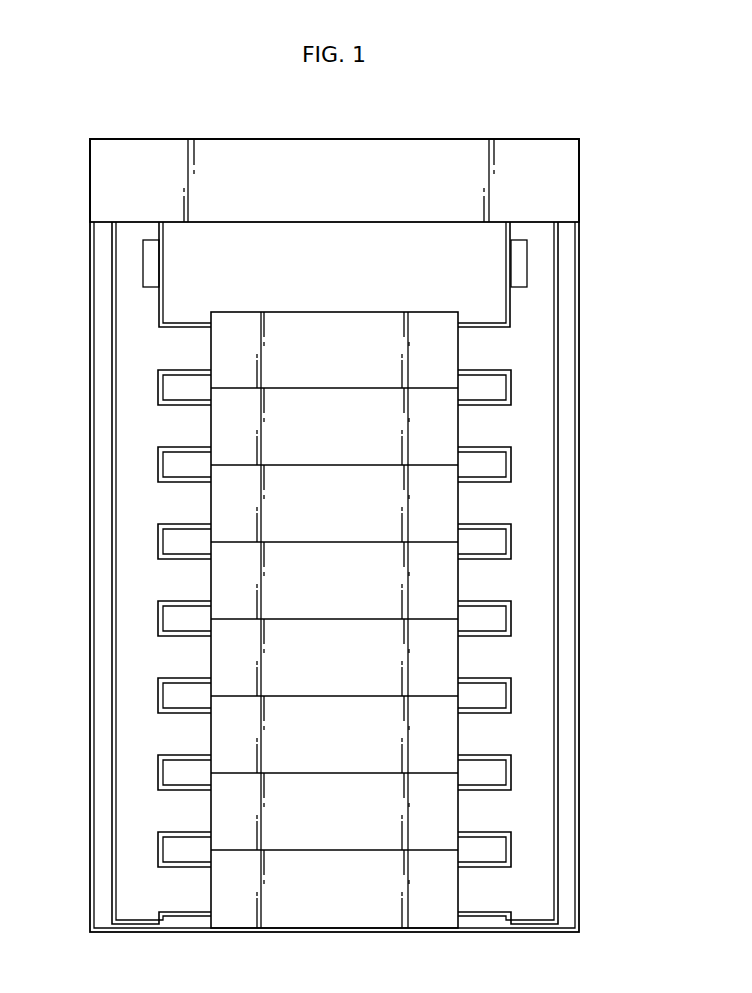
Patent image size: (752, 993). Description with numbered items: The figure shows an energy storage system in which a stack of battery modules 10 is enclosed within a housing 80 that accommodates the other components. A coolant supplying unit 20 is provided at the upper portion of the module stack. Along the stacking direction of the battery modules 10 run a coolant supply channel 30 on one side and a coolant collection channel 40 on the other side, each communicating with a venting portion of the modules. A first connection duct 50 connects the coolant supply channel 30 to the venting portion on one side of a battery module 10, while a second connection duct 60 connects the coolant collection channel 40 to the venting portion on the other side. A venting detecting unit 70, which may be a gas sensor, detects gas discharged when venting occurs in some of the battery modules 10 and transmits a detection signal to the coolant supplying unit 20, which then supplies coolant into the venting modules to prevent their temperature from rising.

The battery module 10 is at (334, 312).
The coolant supplying unit 20 is at (435, 139).
The coolant supply channel 30 is at (556, 313).
The coolant collection channel 40 is at (112, 313).
The first connection duct 50 is at (480, 323).
The second connection duct 60 is at (184, 323).
The venting detecting unit 70 is at (143, 262).
The housing 80 is at (580, 566).